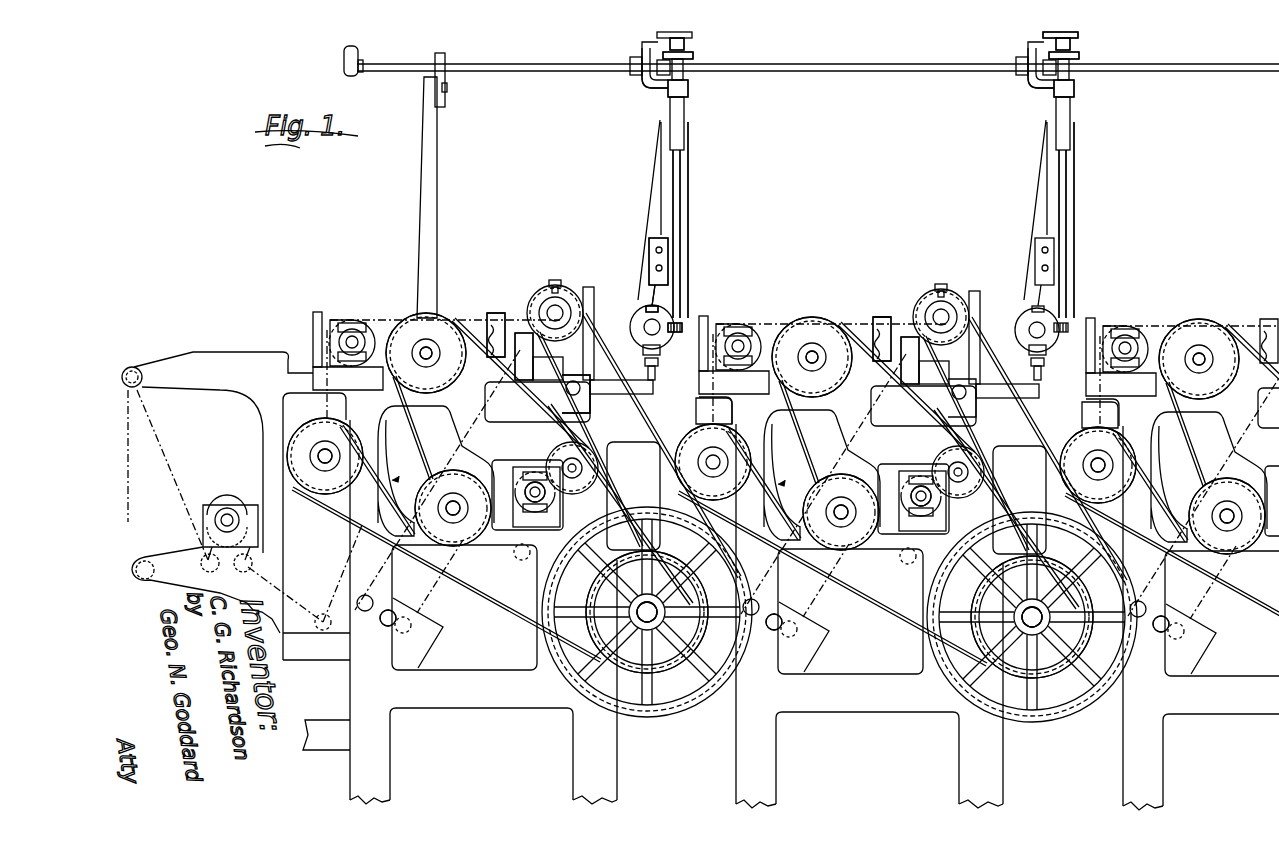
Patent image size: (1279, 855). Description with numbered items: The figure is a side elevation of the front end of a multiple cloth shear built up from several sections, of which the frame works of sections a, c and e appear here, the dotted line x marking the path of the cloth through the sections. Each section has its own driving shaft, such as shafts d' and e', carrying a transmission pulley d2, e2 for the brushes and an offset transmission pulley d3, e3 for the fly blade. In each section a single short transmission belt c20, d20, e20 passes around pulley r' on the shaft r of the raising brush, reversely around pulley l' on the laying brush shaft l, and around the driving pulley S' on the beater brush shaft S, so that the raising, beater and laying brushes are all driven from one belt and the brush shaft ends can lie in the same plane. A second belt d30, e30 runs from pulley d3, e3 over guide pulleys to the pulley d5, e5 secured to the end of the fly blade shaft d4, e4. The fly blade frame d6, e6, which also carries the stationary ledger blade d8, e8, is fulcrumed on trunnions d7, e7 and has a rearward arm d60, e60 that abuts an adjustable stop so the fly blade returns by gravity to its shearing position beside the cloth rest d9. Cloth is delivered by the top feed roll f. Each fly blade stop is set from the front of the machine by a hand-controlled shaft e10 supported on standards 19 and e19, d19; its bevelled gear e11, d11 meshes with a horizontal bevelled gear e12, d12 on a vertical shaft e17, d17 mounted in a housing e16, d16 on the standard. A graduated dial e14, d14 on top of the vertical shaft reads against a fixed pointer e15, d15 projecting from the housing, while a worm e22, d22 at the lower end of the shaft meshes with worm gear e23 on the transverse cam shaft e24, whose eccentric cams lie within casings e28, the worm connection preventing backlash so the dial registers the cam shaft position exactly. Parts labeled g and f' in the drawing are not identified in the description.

The standard 19 is at (437, 180).
The hand-controlled shaft e10 is at (524, 70).
The section e is at (486, 545).
The section a is at (872, 549).
The section c is at (1182, 551).
The cloth path dotted line x is at (200, 430).
The fixed pointer e15 is at (657, 35).
The graduated dial e14 is at (693, 35).
The horizontal bevelled gear e12 is at (693, 58).
The bevelled gear e11 is at (645, 80).
The housing e16 is at (668, 92).
The vertical shaft e17 is at (680, 162).
The standard e19 is at (689, 190).
The worm gear e23 is at (649, 290).
The encircling casing e28 is at (676, 322).
The worm e22 is at (668, 312).
The transverse shaft e24 is at (640, 327).
The fly blade shaft pulley e5 is at (555, 313).
The fly blade frame e6 is at (568, 294).
The fly blade shaft e4 is at (555, 313).
The ledger blade e8 is at (497, 313).
The rock-shaft or trunnions e7 is at (580, 395).
The rearward arm e60 is at (696, 408).
The transmission belt e30 is at (600, 468).
The transmission pulley e3 is at (645, 508).
The transmission pulley e2 is at (632, 612).
The transmission belt e20 is at (520, 605).
The driving shaft e' is at (662, 670).
The fixed pointer d15 is at (1043, 35).
The graduated dial d14 is at (1079, 35).
The horizontal bevelled gear d12 is at (1079, 58).
The bevelled gear d11 is at (1031, 80).
The housing d16 is at (1054, 92).
The vertical shaft d17 is at (1066, 185).
The standard d19 is at (1075, 215).
The worm d22 is at (1055, 316).
The fly blade shaft pulley d5 is at (941, 317).
The fly blade shaft d4 is at (941, 317).
The fly blade frame d6 is at (973, 340).
The cloth rest d9 is at (912, 320).
The ledger blade d8 is at (903, 330).
The rock-shaft or trunnions d7 is at (966, 399).
The rearward arm d60 is at (1082, 412).
The transmission belt d30 is at (984, 472).
The transmission pulley d3 is at (1015, 712).
The transmission pulley d2 is at (1016, 617).
The transmission belt d20 is at (895, 606).
The driving shaft d' is at (1057, 674).
The transmission belt c20 is at (1255, 590).
The top feed roll f is at (738, 328).
The driving pulley S' is at (812, 342).
The beater brush shaft S is at (806, 328).
The shaft g is at (812, 357).
The pulley r' is at (679, 449).
The raising brush shaft r is at (700, 406).
The pulley l' is at (833, 500).
The laying brush shaft l is at (840, 503).
The pulley f' is at (728, 472).